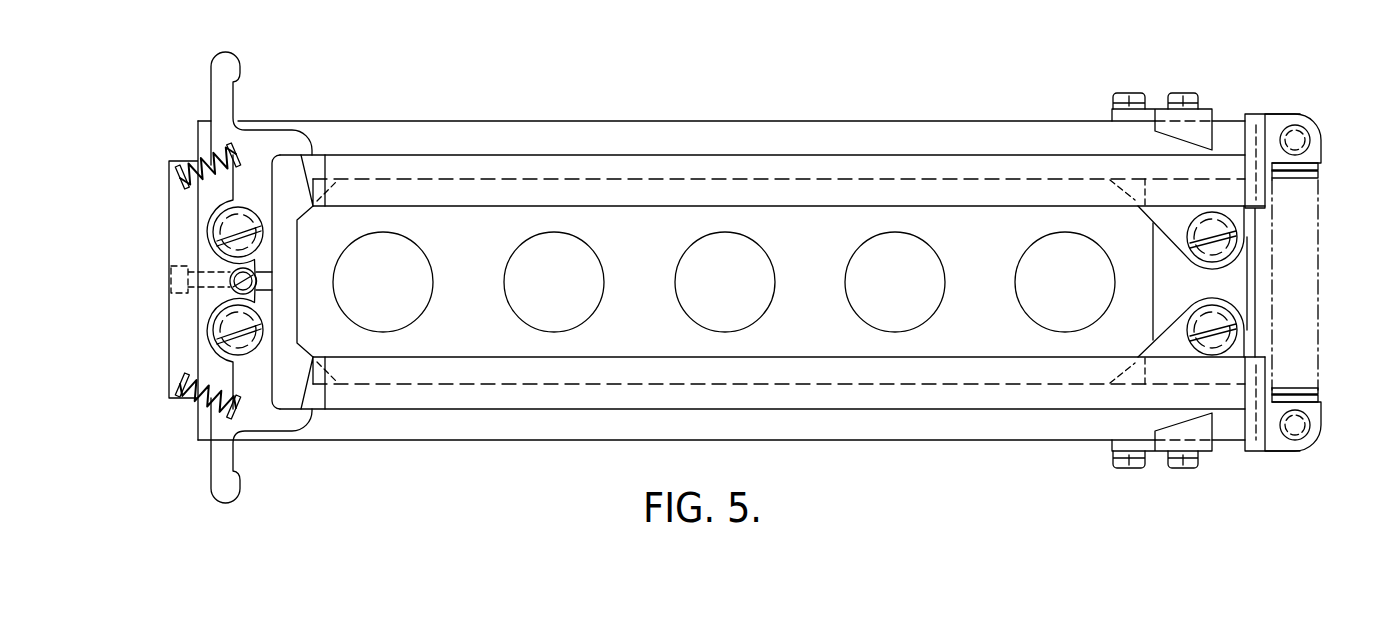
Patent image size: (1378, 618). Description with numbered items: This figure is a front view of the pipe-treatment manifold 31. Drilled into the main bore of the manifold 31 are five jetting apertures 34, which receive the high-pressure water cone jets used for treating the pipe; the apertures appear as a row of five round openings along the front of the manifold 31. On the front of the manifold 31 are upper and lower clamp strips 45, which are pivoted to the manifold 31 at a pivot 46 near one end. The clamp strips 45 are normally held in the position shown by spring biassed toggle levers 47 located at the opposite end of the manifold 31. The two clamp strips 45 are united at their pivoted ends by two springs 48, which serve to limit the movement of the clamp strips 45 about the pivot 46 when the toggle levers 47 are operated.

The pipe-treatment manifold 31 is at (652, 114).
The jetting apertures 34 is at (377, 255).
The clamp strips 45 is at (1010, 168).
The pivot 46 is at (1212, 223).
The spring biassed toggle levers 47 is at (227, 100).
The springs 48 is at (1318, 172).